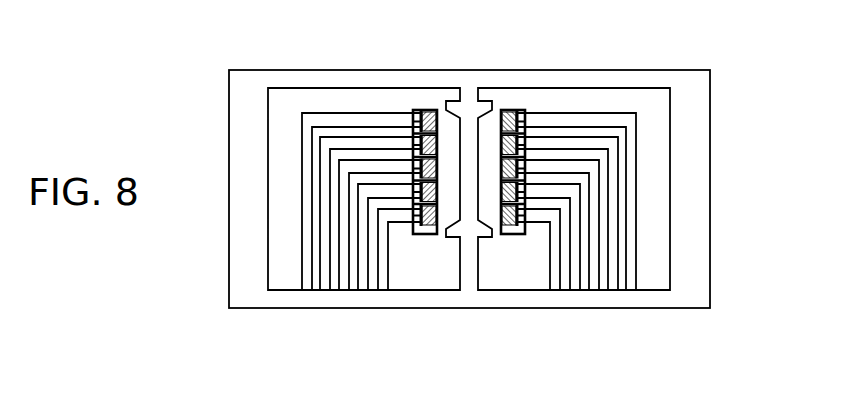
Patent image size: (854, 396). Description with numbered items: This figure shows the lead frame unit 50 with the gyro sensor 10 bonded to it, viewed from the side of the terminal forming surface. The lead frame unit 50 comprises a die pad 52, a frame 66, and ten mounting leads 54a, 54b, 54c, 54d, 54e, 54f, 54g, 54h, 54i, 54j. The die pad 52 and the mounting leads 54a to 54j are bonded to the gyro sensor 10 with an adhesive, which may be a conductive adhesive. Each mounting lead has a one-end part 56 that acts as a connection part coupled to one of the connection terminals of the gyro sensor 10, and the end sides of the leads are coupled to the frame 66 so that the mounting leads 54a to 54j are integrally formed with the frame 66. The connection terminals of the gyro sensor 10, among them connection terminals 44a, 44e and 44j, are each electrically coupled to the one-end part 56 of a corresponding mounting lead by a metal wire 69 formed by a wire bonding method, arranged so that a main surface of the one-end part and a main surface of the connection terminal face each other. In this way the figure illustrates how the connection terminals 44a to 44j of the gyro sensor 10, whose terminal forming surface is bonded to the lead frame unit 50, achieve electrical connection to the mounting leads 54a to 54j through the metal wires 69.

The gyro sensor 10 is at (437, 104).
The connection terminal 44a is at (432, 108).
The connection terminal 44e is at (436, 226).
The connection terminal 44j is at (505, 235).
The lead frame unit 50 is at (572, 67).
The die pad 52 is at (468, 296).
The mounting lead 54a is at (350, 111).
The mounting lead 54b is at (339, 133).
The mounting lead 54c is at (348, 158).
The mounting lead 54d is at (358, 232).
The mounting lead 54e is at (377, 268).
The mounting lead 54f is at (578, 111).
The mounting lead 54g is at (598, 138).
The mounting lead 54h is at (600, 187).
The mounting lead 54i is at (582, 215).
The mounting lead 54j is at (564, 247).
The one-end part 56 is at (532, 120).
The frame 66 is at (690, 287).
The metal wire 69 is at (507, 107).